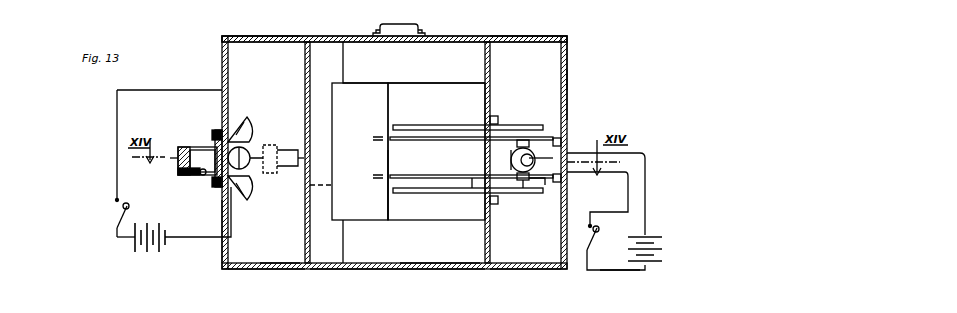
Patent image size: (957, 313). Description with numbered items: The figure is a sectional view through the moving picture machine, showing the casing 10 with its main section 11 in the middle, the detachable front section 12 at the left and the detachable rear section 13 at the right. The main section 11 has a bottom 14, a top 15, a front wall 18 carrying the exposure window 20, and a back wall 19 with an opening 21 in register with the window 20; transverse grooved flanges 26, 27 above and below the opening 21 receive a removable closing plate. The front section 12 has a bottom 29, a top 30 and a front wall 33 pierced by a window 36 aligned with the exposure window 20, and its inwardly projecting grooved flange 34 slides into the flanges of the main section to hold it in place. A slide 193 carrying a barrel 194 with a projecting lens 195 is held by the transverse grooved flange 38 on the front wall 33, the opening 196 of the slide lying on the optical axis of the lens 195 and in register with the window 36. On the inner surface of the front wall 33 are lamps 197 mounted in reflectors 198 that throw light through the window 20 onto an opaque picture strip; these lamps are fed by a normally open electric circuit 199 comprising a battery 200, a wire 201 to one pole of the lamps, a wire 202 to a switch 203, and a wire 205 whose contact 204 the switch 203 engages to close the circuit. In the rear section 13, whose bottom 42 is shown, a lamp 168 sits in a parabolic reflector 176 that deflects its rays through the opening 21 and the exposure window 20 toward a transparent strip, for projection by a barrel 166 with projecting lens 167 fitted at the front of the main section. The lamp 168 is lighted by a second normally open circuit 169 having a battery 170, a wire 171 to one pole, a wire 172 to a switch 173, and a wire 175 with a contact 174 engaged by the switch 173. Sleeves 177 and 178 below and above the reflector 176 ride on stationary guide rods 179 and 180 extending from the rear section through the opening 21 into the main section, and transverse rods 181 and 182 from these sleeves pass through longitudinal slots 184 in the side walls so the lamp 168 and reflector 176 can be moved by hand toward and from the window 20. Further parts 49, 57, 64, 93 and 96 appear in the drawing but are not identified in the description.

The casing 10 is at (568, 40).
The main section 11 is at (418, 269).
The front section 12 is at (258, 269).
The rear section 13 is at (567, 62).
The bottom 14 is at (456, 269).
The top 15 is at (449, 36).
The front wall 18 is at (305, 61).
The back wall 19 is at (490, 60).
The exposure window 20 is at (310, 137).
The opening 21 is at (487, 153).
The grooved flange 26 is at (495, 204).
The grooved flange 27 is at (493, 116).
The bottom 29 is at (284, 269).
The top 30 is at (262, 36).
The front wall 33 is at (222, 262).
The grooved flange 34 is at (217, 188).
The window 36 is at (228, 163).
The grooved flange 38 is at (217, 130).
The bottom 42 is at (546, 269).
The block 49 is at (428, 83).
The block 57 is at (425, 220).
The wall 64 is at (388, 207).
The top wall 93 is at (533, 36).
The end wall 96 is at (567, 80).
The barrel 166 is at (332, 185).
The projecting lens 167 is at (275, 145).
The lamp 168 is at (510, 160).
The electric circuit 169 is at (646, 156).
The battery 170 is at (663, 249).
The wire 171 is at (646, 195).
The wire 172 is at (625, 271).
The switch 173 is at (594, 246).
The contact 174 is at (592, 225).
The wire 175 is at (597, 199).
The reflector 176 is at (561, 148).
The sleeve 177 is at (528, 185).
The sleeve 178 is at (561, 138).
The guide rod 179 is at (472, 180).
The guide rod 180 is at (424, 175).
The transverse rod 181 is at (523, 193).
The transverse rod 182 is at (526, 140).
The slots 184 is at (391, 177).
The slide 193 is at (213, 178).
The barrel 194 is at (200, 148).
The projecting lens 195 is at (178, 148).
The opening 196 is at (200, 170).
The lamp 197 is at (236, 158).
The reflector 198 is at (240, 194).
The electric circuit 199 is at (117, 90).
The battery 200 is at (148, 253).
The wire 201 is at (192, 239).
The wire 202 is at (117, 238).
The switch 203 is at (115, 220).
The contact 204 is at (115, 199).
The wire 205 is at (117, 138).